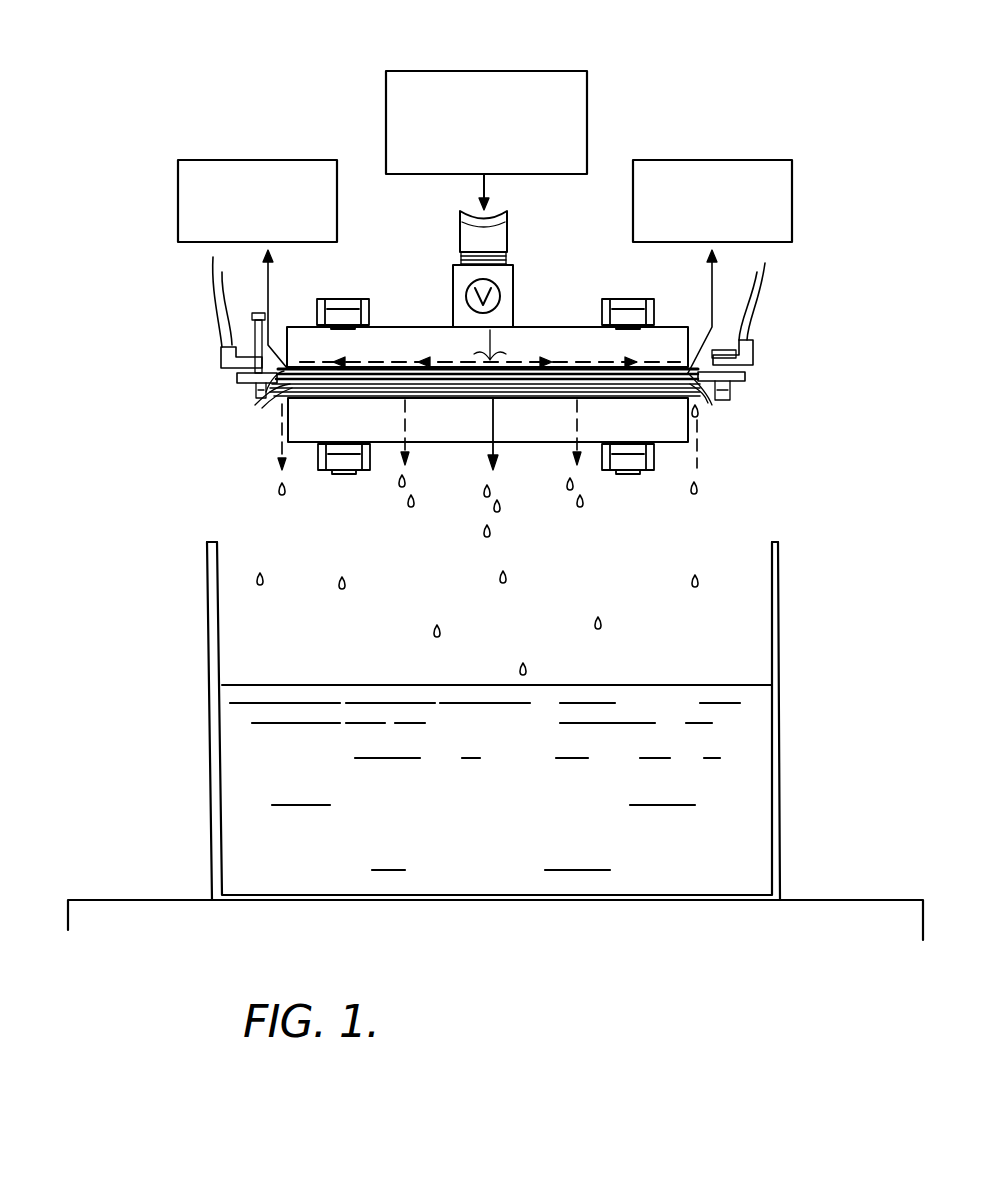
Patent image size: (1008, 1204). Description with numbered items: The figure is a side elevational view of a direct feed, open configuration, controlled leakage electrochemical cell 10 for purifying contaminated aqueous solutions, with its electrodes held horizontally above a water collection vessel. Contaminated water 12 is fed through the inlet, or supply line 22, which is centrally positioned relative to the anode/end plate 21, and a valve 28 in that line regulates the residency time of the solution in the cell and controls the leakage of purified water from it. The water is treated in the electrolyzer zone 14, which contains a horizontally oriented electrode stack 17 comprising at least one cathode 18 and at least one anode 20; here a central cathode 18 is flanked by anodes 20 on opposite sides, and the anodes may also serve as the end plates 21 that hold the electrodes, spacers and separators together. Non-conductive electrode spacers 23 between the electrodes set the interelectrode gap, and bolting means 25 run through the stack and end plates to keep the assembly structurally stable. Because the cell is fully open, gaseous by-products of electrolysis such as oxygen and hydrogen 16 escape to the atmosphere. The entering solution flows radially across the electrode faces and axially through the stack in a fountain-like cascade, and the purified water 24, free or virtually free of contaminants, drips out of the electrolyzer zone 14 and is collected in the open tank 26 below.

The electrochemical cell 10 is at (792, 432).
The contaminated water 12 is at (564, 71).
The electrolyzer zone 14 is at (770, 340).
The oxygen and hydrogen 16 is at (268, 160).
The electrode stack 17 is at (422, 320).
The cathode 18 is at (276, 398).
The anode 20 is at (696, 404).
The end plates 21 is at (546, 337).
The inlet / supply line 22 is at (503, 210).
The electrode spacers 23 is at (280, 402).
The purified water 24 is at (694, 580).
The bolting means 25 is at (352, 298).
The open tank 26 is at (780, 717).
The valve 28 is at (502, 297).